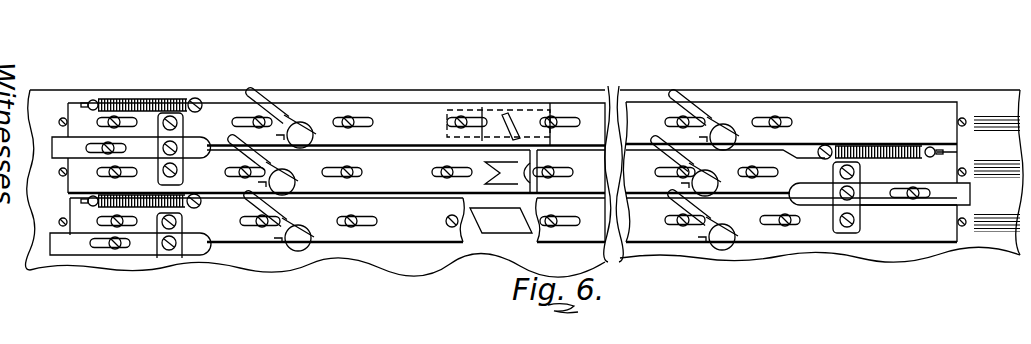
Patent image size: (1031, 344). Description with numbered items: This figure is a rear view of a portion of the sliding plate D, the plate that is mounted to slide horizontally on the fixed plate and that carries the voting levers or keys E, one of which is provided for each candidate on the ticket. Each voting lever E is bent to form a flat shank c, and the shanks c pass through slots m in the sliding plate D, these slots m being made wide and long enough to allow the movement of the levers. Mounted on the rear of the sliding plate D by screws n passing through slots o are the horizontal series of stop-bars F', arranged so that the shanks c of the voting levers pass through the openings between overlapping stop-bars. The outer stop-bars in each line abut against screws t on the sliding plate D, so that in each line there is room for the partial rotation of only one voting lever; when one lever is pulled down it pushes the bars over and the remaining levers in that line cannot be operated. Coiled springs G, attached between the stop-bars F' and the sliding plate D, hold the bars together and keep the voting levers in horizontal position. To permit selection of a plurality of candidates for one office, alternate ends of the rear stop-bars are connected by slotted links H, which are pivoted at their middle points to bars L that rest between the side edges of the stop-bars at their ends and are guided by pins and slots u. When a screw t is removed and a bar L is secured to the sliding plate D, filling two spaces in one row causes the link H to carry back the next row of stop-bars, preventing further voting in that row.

The sliding plate D is at (50, 96).
The sliding plate F' is at (512, 172).
The screw t is at (58, 122).
The coiled spring G is at (145, 98).
The pins and slots u is at (92, 152).
The slotted link H is at (184, 138).
The slot o is at (368, 172).
The screw n is at (352, 172).
The voting lever E is at (305, 117).
The flat shank c is at (515, 120).
The slot m is at (501, 221).
The bar L is at (892, 206).